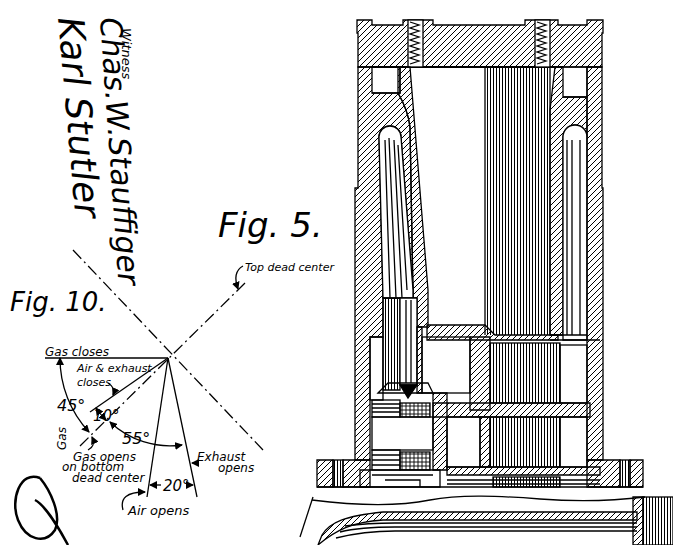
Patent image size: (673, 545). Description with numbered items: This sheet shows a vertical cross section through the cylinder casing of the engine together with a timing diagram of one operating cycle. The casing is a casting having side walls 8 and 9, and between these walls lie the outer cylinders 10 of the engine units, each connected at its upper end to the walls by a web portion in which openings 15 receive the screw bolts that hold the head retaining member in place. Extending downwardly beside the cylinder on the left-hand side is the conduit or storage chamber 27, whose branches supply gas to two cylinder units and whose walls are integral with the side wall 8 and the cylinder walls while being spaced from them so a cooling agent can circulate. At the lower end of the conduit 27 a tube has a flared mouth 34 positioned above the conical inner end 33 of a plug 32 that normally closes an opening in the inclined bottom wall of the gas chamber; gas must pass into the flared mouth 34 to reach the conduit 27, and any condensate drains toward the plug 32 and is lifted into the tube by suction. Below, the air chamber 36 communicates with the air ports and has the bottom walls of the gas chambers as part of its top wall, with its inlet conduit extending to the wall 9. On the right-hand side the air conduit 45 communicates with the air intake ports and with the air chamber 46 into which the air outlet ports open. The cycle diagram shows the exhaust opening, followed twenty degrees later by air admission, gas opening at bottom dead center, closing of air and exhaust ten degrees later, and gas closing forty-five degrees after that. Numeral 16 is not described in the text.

The side wall 8 is at (357, 114).
The side wall 9 is at (598, 107).
The outer cylinder 10 is at (496, 201).
The opening 15 is at (414, 66).
The cylinder head 16 is at (481, 61).
The conduit or storage chamber 27 is at (408, 251).
The plug 32 is at (400, 418).
The conical inner end 33 is at (417, 390).
The flared mouth 34 is at (383, 378).
The air chamber 36 is at (390, 435).
The air conduit 45 is at (580, 290).
The air chamber 46 is at (574, 382).